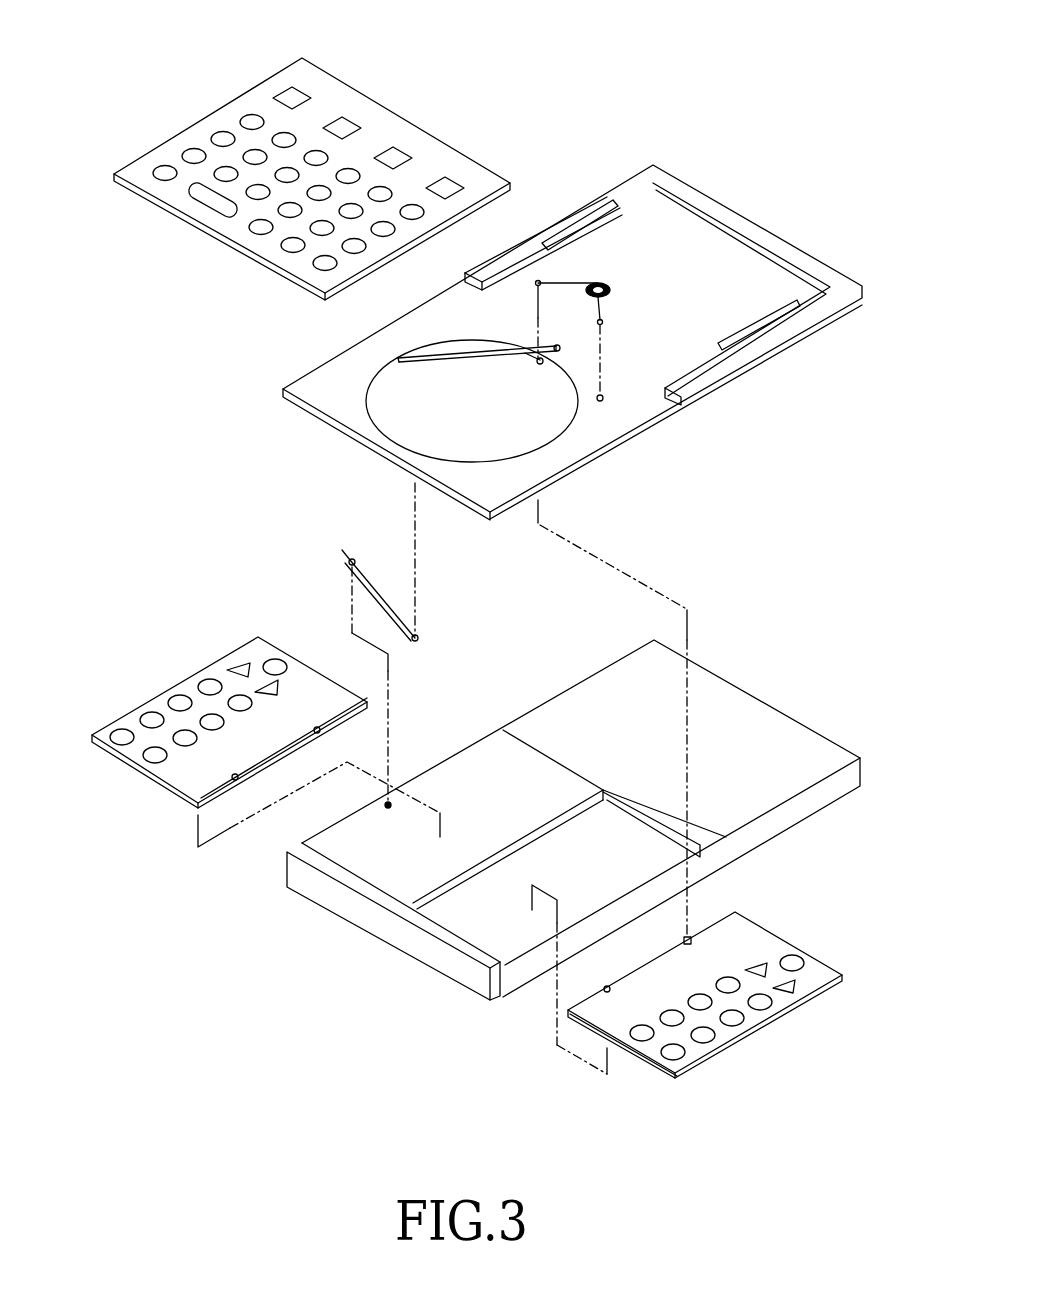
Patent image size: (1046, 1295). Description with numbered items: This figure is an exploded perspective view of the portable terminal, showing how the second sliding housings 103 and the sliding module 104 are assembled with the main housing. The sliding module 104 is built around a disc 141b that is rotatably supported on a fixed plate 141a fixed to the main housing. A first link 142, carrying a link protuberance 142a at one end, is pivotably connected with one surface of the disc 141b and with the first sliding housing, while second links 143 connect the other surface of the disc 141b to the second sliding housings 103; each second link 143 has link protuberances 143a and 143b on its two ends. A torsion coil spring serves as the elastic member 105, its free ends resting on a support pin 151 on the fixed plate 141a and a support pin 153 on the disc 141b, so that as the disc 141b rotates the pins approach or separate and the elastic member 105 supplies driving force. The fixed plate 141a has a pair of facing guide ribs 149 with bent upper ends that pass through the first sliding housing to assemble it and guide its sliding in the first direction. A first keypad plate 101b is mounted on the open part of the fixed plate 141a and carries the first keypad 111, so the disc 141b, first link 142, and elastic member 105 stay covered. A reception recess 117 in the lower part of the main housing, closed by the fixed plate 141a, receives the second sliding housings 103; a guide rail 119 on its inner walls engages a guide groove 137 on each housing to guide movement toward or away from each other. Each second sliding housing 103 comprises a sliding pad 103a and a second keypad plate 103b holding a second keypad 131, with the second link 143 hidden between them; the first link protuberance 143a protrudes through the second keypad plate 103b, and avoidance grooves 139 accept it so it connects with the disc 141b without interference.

The first keypad plate 101b is at (180, 120).
The first keypad 111 is at (247, 118).
The sliding module 104 is at (743, 380).
The fixed plate 141a is at (797, 253).
The disc 141b is at (537, 433).
The guide ribs 149 is at (613, 202).
The elastic member 105 is at (613, 278).
The support pin 151 is at (603, 401).
The first link 142 is at (398, 357).
The link protuberance 142a is at (559, 351).
The support pin 153 is at (540, 364).
The second link 143 is at (350, 560).
The link protuberance 143b is at (352, 566).
The first link protuberance 143a is at (418, 636).
The second keypad plate 103b is at (190, 688).
The second keypad 131 is at (122, 733).
The avoidance grooves 139 is at (320, 732).
The sliding pad 103a is at (387, 875).
The reception recess 117 is at (480, 927).
The guide rail 119 is at (702, 848).
The second sliding housing 103 is at (715, 1062).
The guide groove 137 is at (658, 1067).